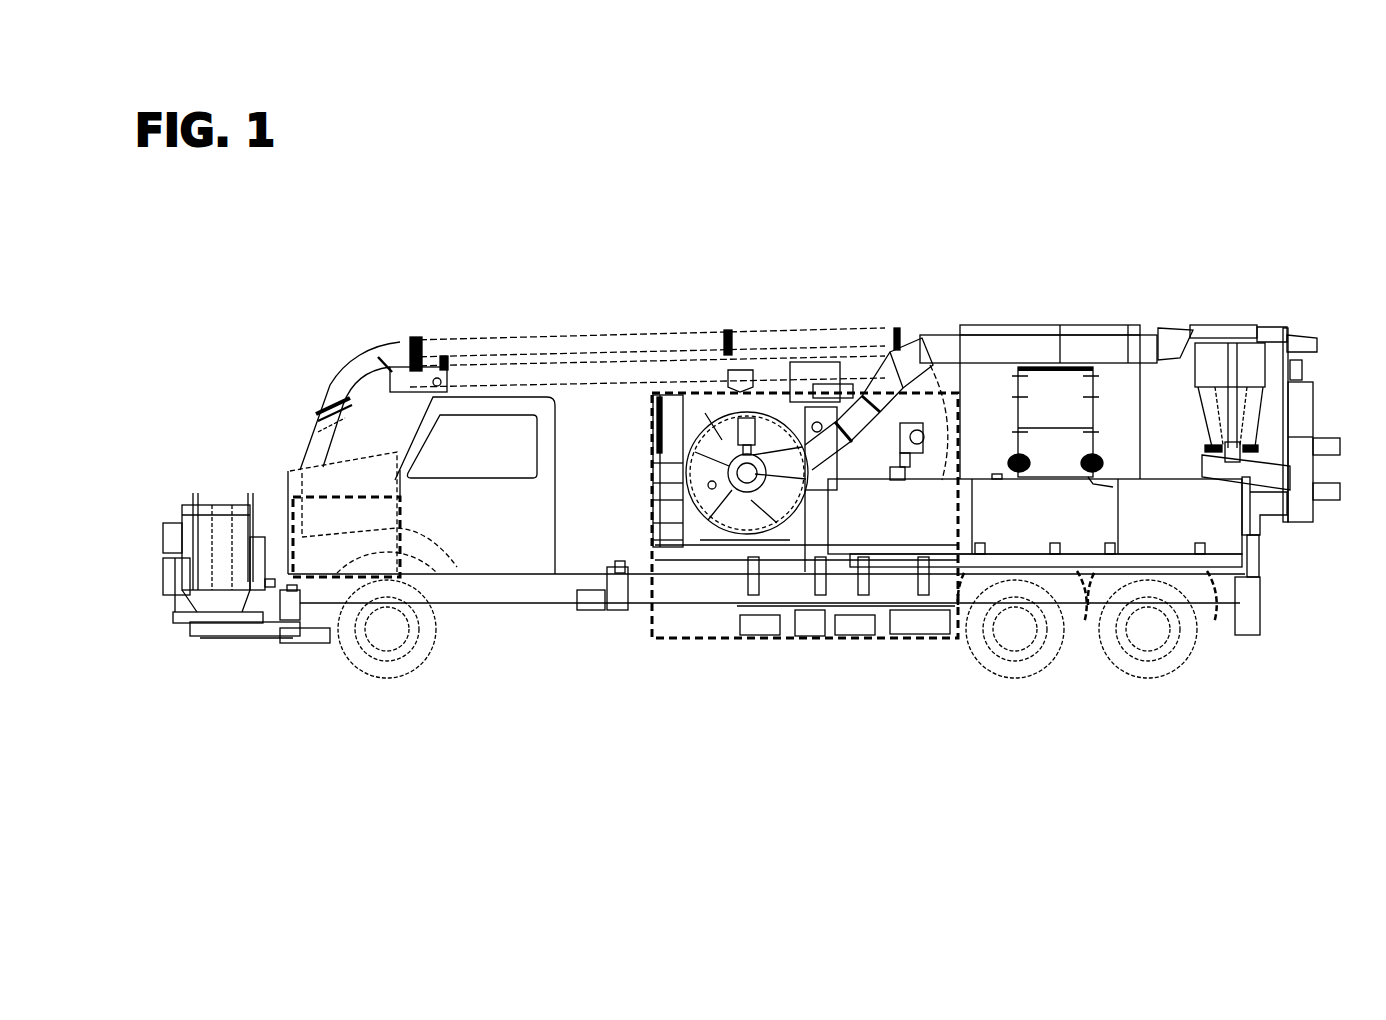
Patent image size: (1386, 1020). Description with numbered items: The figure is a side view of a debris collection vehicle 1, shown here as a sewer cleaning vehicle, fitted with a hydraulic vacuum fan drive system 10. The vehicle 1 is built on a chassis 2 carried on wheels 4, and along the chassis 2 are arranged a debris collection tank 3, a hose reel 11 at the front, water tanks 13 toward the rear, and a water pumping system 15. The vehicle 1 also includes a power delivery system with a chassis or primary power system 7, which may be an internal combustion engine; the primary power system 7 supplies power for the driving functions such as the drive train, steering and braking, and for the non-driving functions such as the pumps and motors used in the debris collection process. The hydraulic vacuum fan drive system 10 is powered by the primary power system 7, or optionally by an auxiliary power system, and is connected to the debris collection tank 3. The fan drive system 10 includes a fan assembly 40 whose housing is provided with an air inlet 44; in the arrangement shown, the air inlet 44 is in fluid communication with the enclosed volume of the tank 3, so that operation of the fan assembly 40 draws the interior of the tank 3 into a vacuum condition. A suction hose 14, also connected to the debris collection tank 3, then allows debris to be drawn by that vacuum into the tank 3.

The debris collection vehicle 1 is at (250, 242).
The chassis 2 is at (520, 590).
The debris collection tank 3 is at (1167, 387).
The wheels 4 is at (382, 663).
The primary power system 7 is at (345, 577).
The hydraulic vacuum fan drive system 10 is at (785, 392).
The hose reel 11 is at (207, 530).
The water tanks 13 is at (1200, 513).
The suction hose 14 is at (441, 353).
The water pumping system 15 is at (685, 373).
The fan assembly 40 is at (683, 395).
The air inlet 44 is at (748, 475).